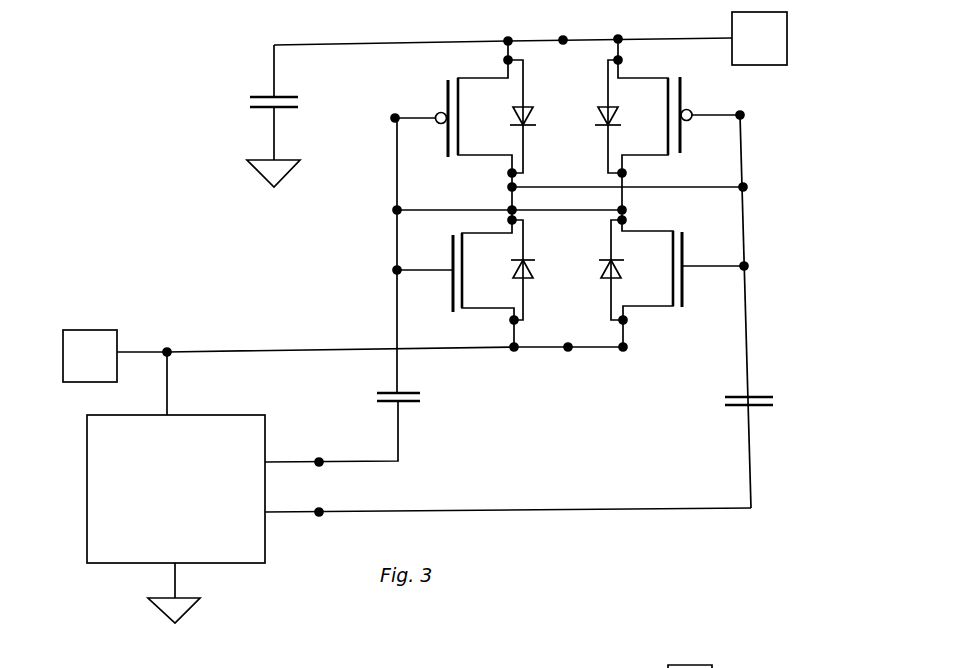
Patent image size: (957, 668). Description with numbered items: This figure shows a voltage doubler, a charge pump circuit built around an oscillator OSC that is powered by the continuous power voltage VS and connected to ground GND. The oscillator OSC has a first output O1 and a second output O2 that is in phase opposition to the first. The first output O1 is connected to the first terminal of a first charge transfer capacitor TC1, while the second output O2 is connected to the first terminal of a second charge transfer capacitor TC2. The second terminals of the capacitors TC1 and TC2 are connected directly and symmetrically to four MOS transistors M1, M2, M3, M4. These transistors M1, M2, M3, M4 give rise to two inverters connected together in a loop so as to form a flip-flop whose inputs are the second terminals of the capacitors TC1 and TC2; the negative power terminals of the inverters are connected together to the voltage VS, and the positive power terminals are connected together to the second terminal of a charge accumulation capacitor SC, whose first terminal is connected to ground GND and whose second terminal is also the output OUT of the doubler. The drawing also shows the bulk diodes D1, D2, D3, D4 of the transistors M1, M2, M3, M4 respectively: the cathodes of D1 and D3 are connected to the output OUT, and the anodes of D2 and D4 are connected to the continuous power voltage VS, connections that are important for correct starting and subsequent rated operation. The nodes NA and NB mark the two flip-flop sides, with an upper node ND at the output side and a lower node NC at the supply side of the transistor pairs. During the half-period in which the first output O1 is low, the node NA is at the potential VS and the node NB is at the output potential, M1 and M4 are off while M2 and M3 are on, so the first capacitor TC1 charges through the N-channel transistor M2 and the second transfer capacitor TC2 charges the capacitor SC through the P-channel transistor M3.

The node ND (supply/output node) ND is at (503, 26).
The output OUT is at (777, 53).
The charge accumulation capacitor SC is at (264, 102).
The ground GND is at (224, 394).
The P-channel MOS transistor M3 is at (446, 107).
The bulk diode D3 is at (507, 118).
The bulk diode D1 is at (624, 108).
The MOS transistor M1 is at (684, 284).
The node NB is at (645, 196).
The node NA is at (494, 255).
The MOS transistor M4 is at (454, 268).
The bulk diode D4 is at (506, 272).
The bulk diode D2 is at (629, 270).
The N-channel MOS transistor M2 is at (685, 270).
The node NC is at (372, 349).
The continuous power voltage VS is at (115, 358).
The oscillator OSC is at (95, 531).
The first output O1 is at (331, 433).
The first charge transfer capacitor TC1 is at (413, 416).
The second output O2 is at (508, 526).
The second charge transfer capacitor TC2 is at (765, 418).